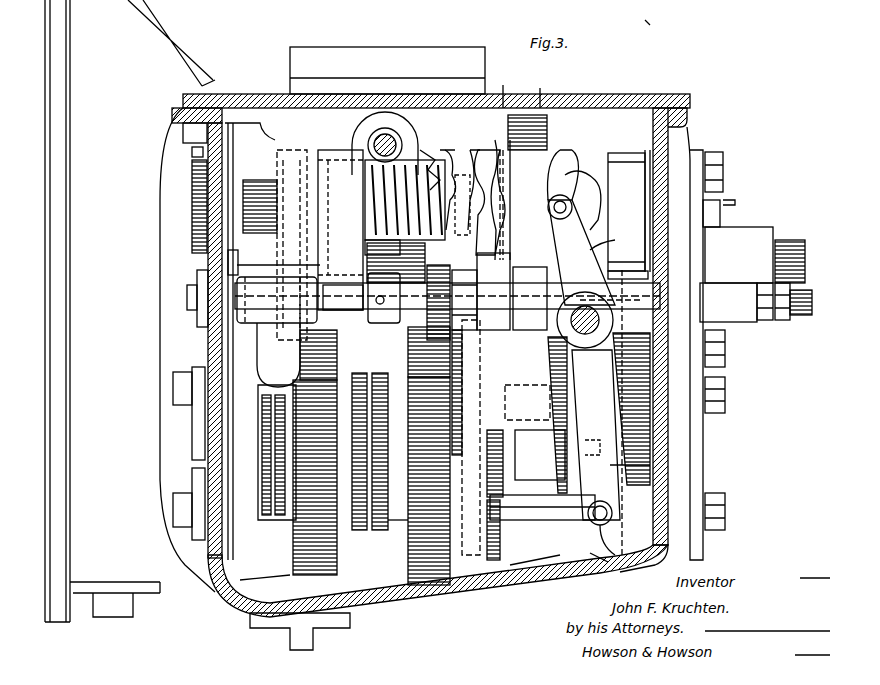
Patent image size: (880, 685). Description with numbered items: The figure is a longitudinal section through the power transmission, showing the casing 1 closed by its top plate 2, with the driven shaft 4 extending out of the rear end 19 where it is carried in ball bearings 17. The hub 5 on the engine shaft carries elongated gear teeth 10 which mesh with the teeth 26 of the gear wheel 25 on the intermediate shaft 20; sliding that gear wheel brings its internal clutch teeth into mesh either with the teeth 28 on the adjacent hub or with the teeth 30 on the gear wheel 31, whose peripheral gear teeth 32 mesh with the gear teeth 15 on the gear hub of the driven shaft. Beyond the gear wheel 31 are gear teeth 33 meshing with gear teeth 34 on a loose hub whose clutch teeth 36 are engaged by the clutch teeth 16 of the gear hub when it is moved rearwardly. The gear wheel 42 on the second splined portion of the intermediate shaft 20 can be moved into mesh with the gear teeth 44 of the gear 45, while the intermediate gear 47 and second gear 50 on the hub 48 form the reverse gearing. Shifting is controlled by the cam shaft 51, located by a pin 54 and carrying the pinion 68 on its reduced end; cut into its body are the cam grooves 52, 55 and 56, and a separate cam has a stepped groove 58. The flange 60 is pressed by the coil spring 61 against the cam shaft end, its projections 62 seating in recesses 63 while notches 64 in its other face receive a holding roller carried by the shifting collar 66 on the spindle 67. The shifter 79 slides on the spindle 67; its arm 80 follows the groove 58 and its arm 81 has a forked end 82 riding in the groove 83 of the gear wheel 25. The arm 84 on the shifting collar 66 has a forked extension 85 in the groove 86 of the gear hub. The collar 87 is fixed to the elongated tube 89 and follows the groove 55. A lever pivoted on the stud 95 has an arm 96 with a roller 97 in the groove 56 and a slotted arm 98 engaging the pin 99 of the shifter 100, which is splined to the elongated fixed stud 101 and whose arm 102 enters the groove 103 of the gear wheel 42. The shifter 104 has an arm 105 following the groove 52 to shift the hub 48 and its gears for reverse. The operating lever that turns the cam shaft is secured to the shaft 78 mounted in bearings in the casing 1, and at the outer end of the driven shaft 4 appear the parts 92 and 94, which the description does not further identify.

The casing 1 is at (540, 568).
The top plate 2 is at (532, 90).
The driven shaft 4 is at (745, 238).
The hub 5 is at (651, 14).
The gear teeth 10 is at (340, 352).
The gear teeth 15 is at (462, 360).
The clutch teeth 16 is at (438, 302).
The ball bearings 17 is at (360, 248).
The rear end 19 is at (480, 455).
The intermediate shaft 20 is at (527, 402).
The gear wheel 25 is at (320, 575).
The teeth 26 is at (265, 584).
The teeth 28 is at (360, 530).
The teeth 30 is at (380, 530).
The gear wheel 31 is at (402, 520).
The gear teeth 32 is at (425, 585).
The gear teeth 33 is at (498, 538).
The gear teeth 34 is at (504, 86).
The clutch teeth 36 is at (464, 300).
The gear wheel 42 is at (548, 477).
The gear teeth 44 is at (560, 108).
The gear 45 is at (530, 570).
The intermediate gear 47 is at (655, 467).
The hub 48 is at (610, 345).
The second gear 50 is at (540, 455).
The cam shaft 51 is at (625, 160).
The cam groove 52 is at (626, 212).
The pin 54 is at (725, 205).
The cam groove 55 is at (489, 202).
The cam groove 56 is at (572, 175).
The groove 58 is at (347, 226).
The flange 60 is at (448, 152).
The coil spring 61 is at (368, 200).
The projections 62 is at (450, 205).
The recesses 63 is at (500, 112).
The notches 64 is at (425, 150).
The shifting collar 66 is at (410, 345).
The spindle 67 is at (343, 297).
The pinion 68 is at (262, 180).
The shaft 78 is at (368, 138).
The shifter 79 is at (277, 300).
The arm 80 is at (280, 265).
The arm 81 is at (278, 355).
The forked end 82 is at (280, 500).
The groove 83 is at (270, 490).
The arm 84 is at (365, 258).
The forked extension 85 is at (368, 240).
The groove 86 is at (382, 323).
The collar 87 is at (493, 291).
The elongated tube 89 is at (530, 298).
The nut 92 is at (765, 320).
The nut 94 is at (783, 320).
The stud 95 is at (600, 305).
The arm 96 is at (614, 238).
The roller 97 is at (582, 227).
The arm 98 is at (592, 560).
The pin 99 is at (590, 522).
The shifter 100 is at (618, 557).
The elongated fixed stud 101 is at (525, 522).
The arm 102 is at (584, 441).
The groove 103 is at (605, 400).
The shifter 104 is at (609, 416).
The arm 105 is at (628, 278).